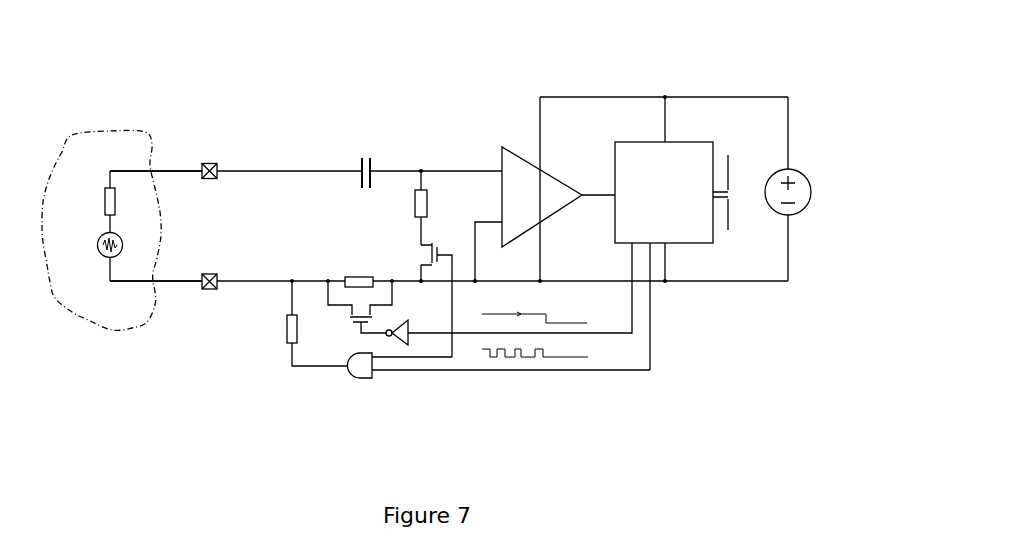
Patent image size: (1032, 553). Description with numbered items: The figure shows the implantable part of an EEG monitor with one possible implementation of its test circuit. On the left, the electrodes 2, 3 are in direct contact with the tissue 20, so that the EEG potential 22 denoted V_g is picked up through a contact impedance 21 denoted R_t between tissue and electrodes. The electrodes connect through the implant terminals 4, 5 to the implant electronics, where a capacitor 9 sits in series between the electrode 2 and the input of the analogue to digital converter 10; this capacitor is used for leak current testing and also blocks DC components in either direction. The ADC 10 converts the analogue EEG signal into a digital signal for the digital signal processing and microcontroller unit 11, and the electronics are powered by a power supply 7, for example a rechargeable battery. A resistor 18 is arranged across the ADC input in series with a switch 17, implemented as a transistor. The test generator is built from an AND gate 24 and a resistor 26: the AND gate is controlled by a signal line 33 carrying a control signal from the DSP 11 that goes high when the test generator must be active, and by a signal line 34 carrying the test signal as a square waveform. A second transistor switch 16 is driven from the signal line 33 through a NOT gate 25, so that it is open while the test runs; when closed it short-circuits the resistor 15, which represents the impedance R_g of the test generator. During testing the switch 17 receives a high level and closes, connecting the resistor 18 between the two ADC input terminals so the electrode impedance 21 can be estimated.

The tissue 20 is at (60, 168).
The contact impedance 21 is at (107, 187).
The EEG potential 22 is at (103, 258).
The electrode 2 is at (157, 171).
The electrode 3 is at (158, 284).
The implant terminal 4 is at (208, 163).
The implant terminal 5 is at (210, 291).
The capacitor 9 is at (365, 158).
The resistor 18 is at (410, 202).
The switch 17 is at (438, 248).
The analogue to digital converter 10 is at (503, 146).
The digital signal processing and microcontroller unit 11 is at (677, 142).
The power supply 7 is at (812, 197).
The resistor 15 is at (355, 277).
The switch 16 is at (348, 323).
The resistor 26 is at (282, 327).
The AND gate 24 is at (357, 380).
The NOT gate 25 is at (410, 338).
The signal line 33 is at (633, 303).
The signal line 34 is at (622, 372).